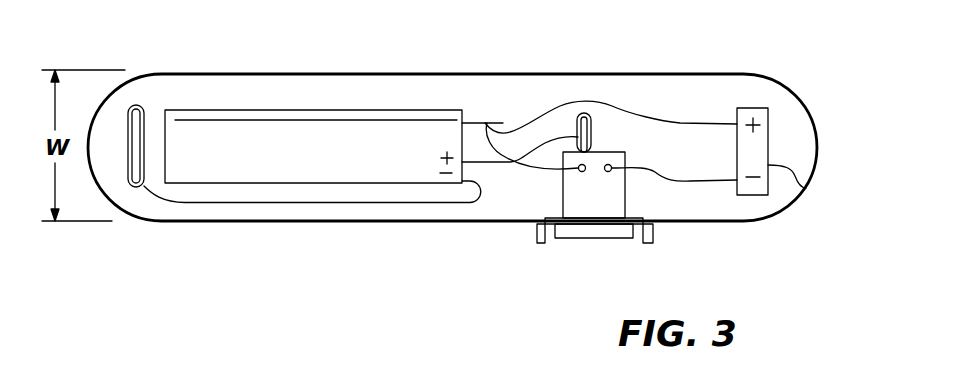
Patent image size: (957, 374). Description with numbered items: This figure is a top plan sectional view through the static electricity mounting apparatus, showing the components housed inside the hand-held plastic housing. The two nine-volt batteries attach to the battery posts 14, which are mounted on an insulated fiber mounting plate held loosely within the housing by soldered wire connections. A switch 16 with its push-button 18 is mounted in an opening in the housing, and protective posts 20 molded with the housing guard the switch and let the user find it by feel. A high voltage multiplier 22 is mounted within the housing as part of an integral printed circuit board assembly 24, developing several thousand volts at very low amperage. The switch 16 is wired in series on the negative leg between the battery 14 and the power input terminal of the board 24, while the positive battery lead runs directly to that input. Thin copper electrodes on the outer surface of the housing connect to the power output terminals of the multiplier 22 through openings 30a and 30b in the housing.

The battery posts 14 is at (815, 190).
The switch 16 is at (606, 206).
The push-button 18 is at (605, 238).
The protective posts 20 is at (537, 243).
The high voltage multiplier 22 is at (318, 167).
The printed circuit board assembly 24 is at (477, 123).
The opening 30a is at (140, 188).
The opening 30b is at (591, 118).